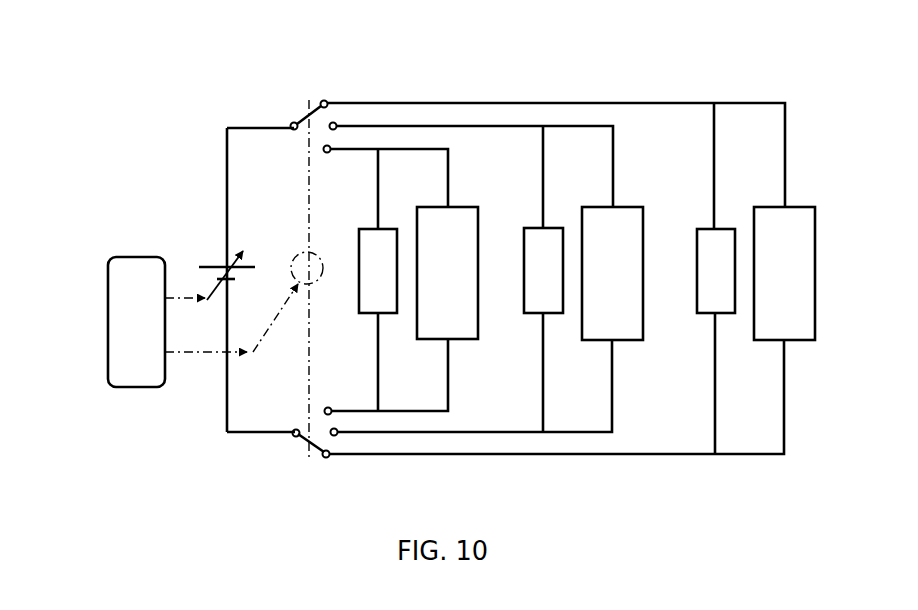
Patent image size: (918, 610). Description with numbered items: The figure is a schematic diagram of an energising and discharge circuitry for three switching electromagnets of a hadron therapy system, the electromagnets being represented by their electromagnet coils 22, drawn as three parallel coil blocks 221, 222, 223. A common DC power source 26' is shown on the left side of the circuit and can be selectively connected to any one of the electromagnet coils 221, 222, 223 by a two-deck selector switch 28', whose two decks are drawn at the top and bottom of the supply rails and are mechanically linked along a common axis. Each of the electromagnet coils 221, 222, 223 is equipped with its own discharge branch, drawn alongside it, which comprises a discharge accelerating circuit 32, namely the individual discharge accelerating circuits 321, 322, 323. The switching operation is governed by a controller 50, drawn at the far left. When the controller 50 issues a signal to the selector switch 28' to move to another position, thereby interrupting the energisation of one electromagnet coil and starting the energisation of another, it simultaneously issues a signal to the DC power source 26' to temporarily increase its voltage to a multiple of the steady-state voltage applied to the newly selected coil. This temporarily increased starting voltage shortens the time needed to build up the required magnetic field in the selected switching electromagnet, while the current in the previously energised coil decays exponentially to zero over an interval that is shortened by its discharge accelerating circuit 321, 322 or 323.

The controller 50 is at (128, 288).
The common DC power source 26' is at (205, 239).
The 2-deck selector switch 28' is at (256, 252).
The discharge accelerating circuit 32 is at (525, 278).
The discharge accelerating circuit 321 is at (375, 247).
The discharge accelerating circuit 322 is at (548, 243).
The discharge accelerating circuit 323 is at (717, 247).
The electromagnet coil 22 is at (616, 273).
The electromagnet coil 221 is at (447, 273).
The electromagnet coil 222 is at (612, 273).
The electromagnet coil 223 is at (784, 273).